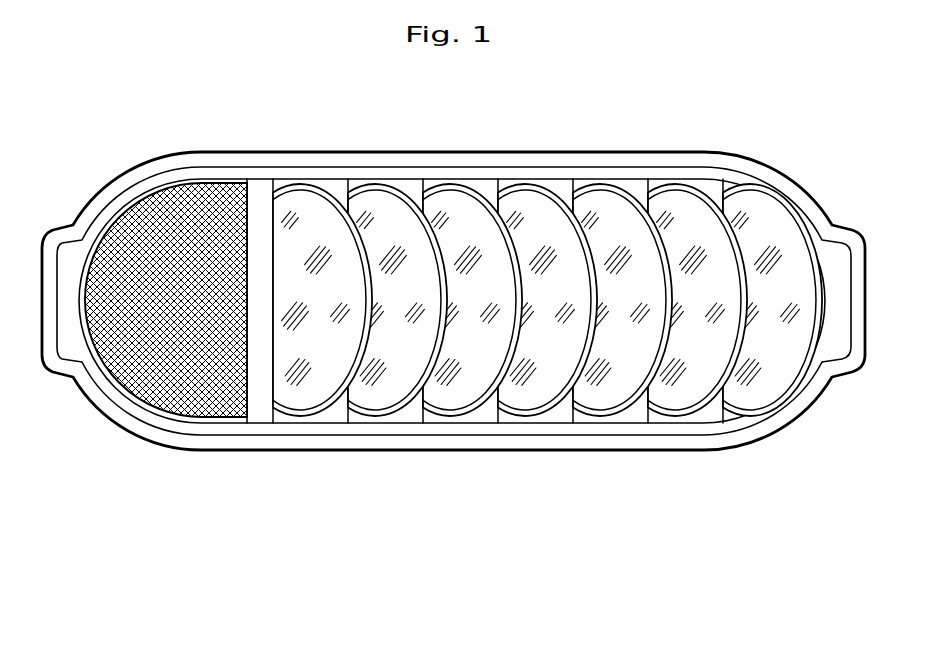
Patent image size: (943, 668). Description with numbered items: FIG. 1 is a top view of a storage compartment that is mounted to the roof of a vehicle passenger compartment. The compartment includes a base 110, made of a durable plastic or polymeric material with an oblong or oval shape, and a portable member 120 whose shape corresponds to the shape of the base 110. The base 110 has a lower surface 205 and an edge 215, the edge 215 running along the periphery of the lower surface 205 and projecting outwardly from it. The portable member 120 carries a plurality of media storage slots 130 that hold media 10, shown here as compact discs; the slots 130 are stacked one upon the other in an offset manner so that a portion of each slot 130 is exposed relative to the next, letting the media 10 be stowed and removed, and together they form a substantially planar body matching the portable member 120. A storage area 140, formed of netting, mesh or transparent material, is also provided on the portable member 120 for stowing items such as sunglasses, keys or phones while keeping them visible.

The media 10 is at (755, 223).
The base 110 is at (245, 142).
The portable member 120 is at (168, 432).
The media storage slot 130 is at (726, 434).
The storage area 140 is at (133, 225).
The lower surface 205 is at (192, 172).
The edge 215 is at (133, 178).